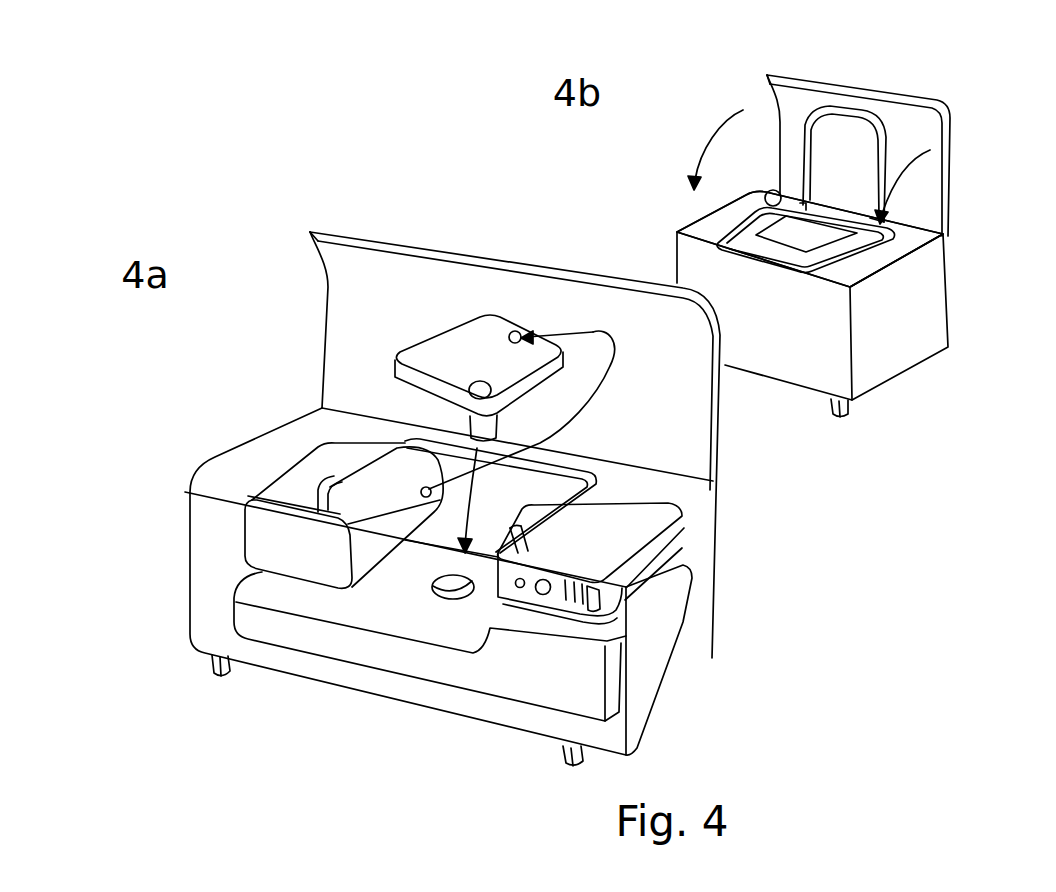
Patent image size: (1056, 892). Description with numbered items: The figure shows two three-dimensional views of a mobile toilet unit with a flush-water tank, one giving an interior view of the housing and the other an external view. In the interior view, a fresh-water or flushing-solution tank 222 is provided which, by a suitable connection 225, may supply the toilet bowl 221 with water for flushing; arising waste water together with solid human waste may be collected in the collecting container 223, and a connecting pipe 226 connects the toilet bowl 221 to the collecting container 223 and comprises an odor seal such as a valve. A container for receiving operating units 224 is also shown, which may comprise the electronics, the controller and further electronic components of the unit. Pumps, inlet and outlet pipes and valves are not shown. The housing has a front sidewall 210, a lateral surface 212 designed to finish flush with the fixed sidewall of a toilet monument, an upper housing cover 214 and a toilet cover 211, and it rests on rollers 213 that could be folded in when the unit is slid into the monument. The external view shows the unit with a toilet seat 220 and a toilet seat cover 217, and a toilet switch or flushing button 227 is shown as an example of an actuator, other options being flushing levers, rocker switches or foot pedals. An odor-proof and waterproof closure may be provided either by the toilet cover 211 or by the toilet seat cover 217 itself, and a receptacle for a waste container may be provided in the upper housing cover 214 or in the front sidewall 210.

The front sidewall 210 is at (810, 295).
The toilet cover 211 is at (677, 408).
The lateral surface 212 is at (899, 317).
The rollers 213 is at (563, 764).
The upper housing cover 214 is at (913, 233).
The toilet seat cover 217 is at (809, 165).
The toilet seat 220 is at (742, 242).
The toilet bowl 221 is at (435, 360).
The flushing-solution tank 222 is at (344, 515).
The collecting container 223 is at (647, 642).
The container for receiving operating units 224 is at (591, 563).
The connection 225 is at (593, 337).
The connecting pipe 226 is at (480, 508).
The flushing button 227 is at (772, 191).